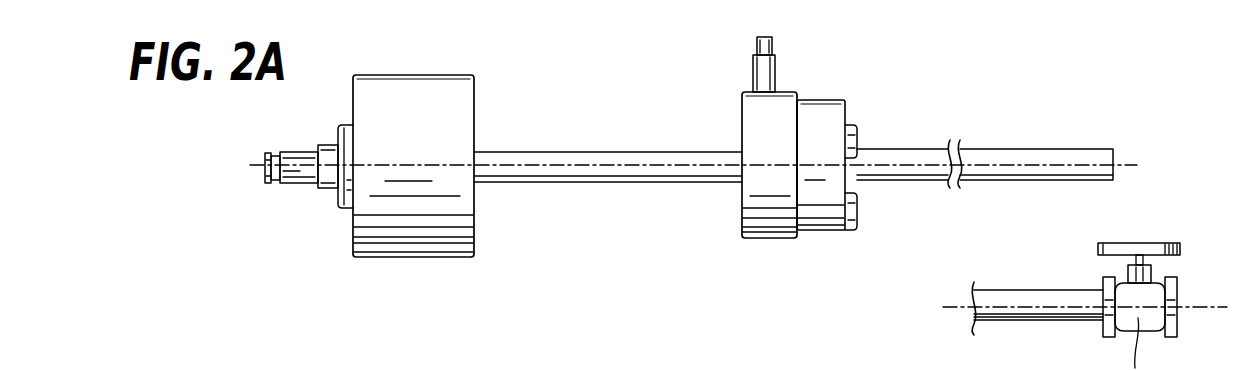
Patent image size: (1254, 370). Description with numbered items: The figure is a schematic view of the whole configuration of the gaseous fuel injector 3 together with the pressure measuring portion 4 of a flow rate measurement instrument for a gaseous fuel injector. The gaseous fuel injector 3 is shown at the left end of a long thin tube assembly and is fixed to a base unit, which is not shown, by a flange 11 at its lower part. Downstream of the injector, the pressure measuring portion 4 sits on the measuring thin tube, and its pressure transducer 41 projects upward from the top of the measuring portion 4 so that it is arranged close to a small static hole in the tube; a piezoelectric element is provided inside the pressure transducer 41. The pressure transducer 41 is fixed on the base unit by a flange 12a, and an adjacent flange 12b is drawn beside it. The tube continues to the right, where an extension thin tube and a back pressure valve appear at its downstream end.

The gaseous fuel injector 3 is at (347, 86).
The flange 11 is at (409, 255).
The pressure measuring portion 4 is at (752, 108).
The pressure transducer 41 is at (770, 65).
The flange 12a is at (762, 238).
The second support block 12b is at (827, 232).